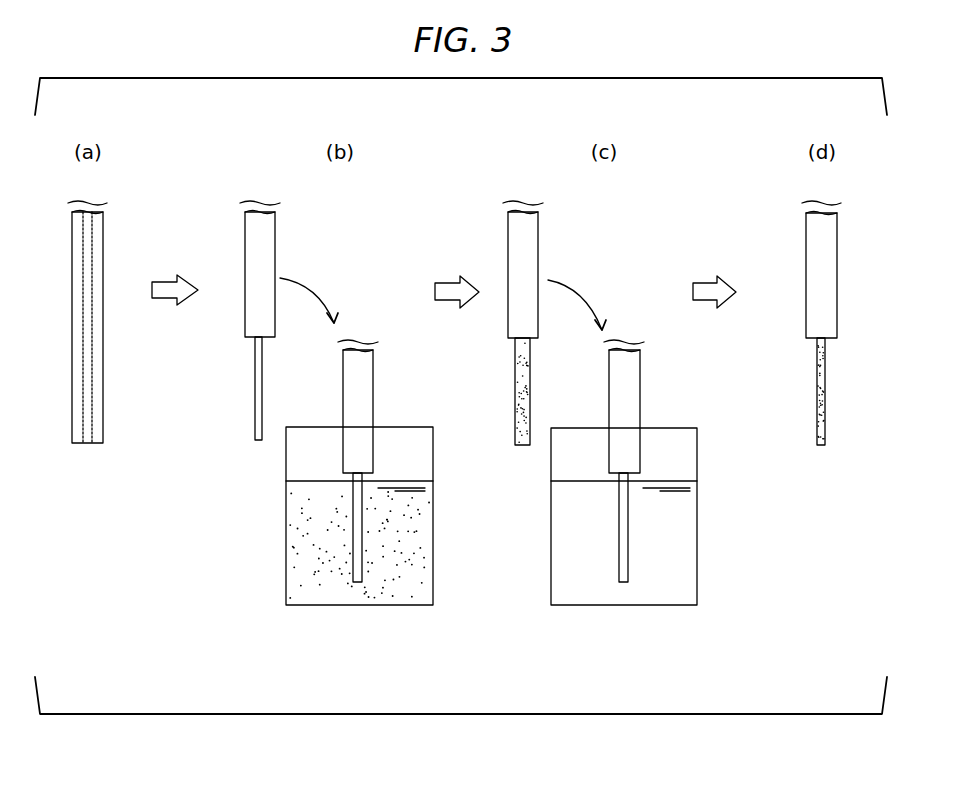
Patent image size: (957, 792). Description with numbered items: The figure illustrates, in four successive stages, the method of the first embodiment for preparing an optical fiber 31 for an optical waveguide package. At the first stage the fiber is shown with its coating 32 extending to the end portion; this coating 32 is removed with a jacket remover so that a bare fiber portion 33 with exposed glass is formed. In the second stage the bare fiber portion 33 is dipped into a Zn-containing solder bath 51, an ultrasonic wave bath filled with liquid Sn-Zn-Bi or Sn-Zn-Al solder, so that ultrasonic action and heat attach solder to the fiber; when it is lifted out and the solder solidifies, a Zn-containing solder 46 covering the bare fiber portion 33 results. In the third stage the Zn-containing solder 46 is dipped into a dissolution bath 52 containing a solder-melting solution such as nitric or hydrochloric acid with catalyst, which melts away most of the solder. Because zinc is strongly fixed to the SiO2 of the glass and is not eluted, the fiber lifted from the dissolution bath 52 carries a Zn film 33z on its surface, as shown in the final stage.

The optical fiber 31 is at (105, 234).
The coating 32 is at (103, 345).
The bare fiber portion 33 is at (92, 383).
The Zn film 33z is at (628, 542).
The Zn-containing solder 46 is at (515, 410).
The Zn-containing solder bath 51 is at (335, 596).
The dissolution bath 52 is at (596, 597).